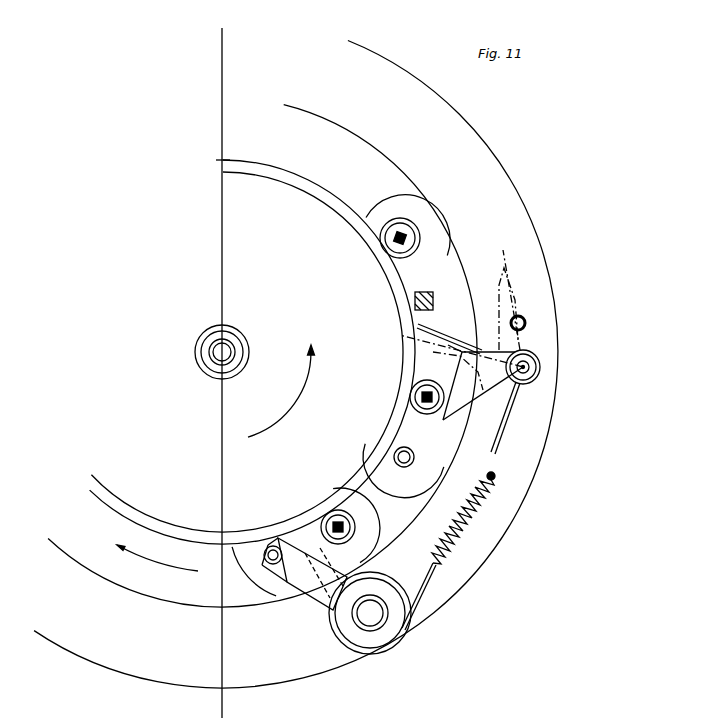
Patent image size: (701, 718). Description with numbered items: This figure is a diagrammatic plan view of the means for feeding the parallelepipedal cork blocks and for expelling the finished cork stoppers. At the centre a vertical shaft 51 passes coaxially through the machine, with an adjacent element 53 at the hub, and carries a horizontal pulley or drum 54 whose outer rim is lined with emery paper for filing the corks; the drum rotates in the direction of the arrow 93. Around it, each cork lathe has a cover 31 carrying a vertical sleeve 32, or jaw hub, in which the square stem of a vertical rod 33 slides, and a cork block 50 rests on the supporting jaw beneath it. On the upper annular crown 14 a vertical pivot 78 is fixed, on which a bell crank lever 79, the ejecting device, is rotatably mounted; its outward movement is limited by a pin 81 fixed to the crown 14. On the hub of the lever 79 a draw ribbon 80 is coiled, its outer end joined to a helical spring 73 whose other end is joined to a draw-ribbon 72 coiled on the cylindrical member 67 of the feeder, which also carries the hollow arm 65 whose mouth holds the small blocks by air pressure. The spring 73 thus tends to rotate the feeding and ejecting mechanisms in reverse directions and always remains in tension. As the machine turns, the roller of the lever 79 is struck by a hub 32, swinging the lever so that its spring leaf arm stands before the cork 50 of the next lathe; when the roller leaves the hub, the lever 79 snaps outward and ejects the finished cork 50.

The annular crown 14 is at (524, 492).
The cover 31 is at (436, 252).
The vertical sleeve 32 is at (391, 244).
The vertical rod 33 is at (406, 232).
The cork block 50 is at (414, 308).
The vertical shaft 51 is at (206, 374).
The hub 53 is at (245, 341).
The pulley or drum 54 is at (205, 533).
The hollow arm 65 is at (350, 579).
The flexible tube 67 is at (395, 619).
The draw-ribbon 72 is at (424, 592).
The helical spring 73 is at (471, 520).
The vertical pivot 78 is at (541, 368).
The bell crank lever 79 is at (512, 383).
The draw ribbon 80 is at (535, 358).
The pin 81 is at (525, 322).
The arrow 93 is at (305, 388).